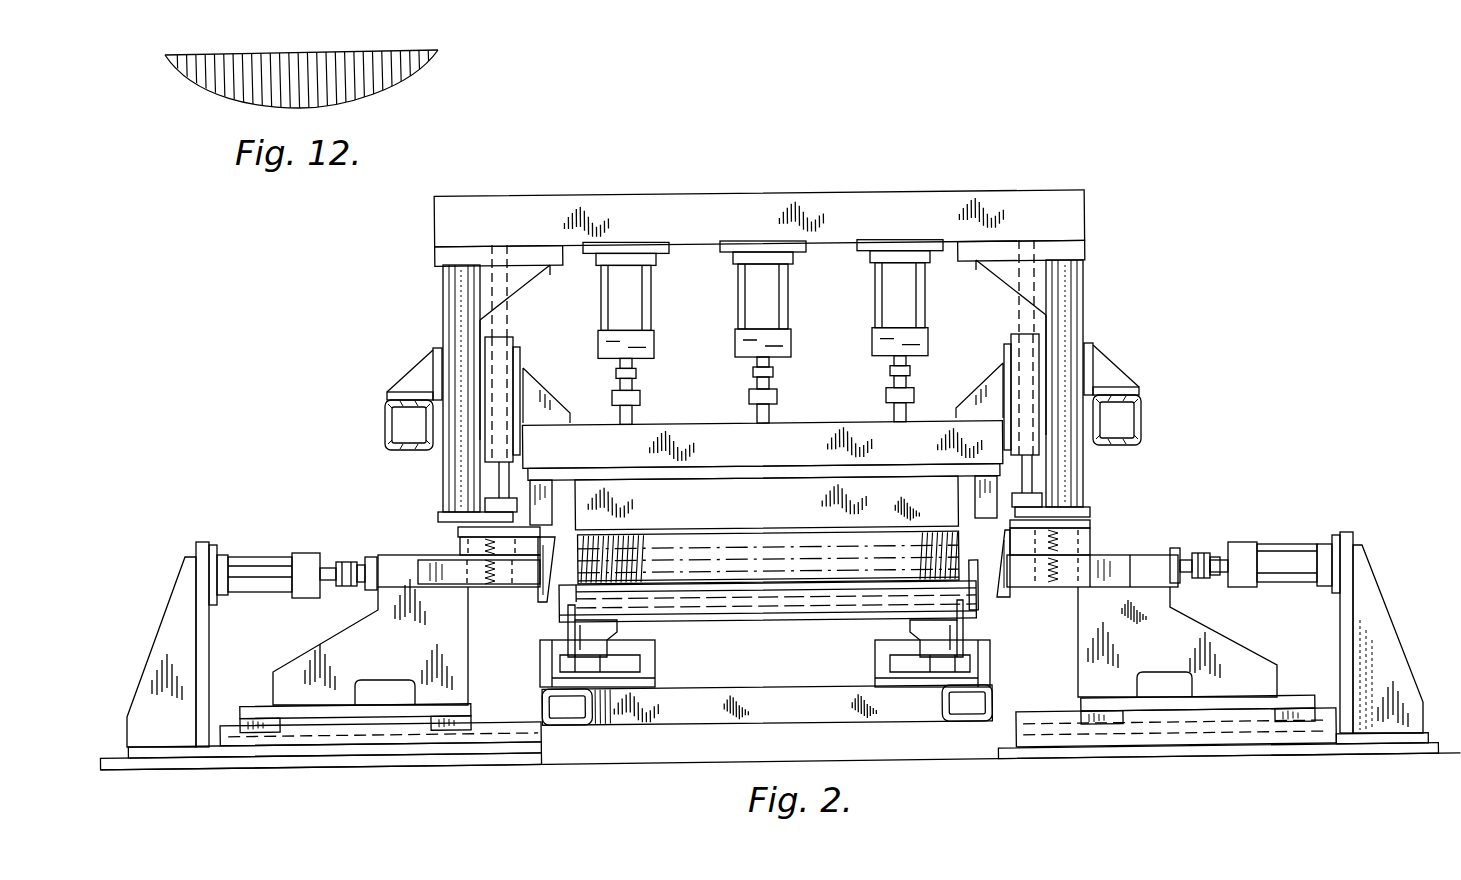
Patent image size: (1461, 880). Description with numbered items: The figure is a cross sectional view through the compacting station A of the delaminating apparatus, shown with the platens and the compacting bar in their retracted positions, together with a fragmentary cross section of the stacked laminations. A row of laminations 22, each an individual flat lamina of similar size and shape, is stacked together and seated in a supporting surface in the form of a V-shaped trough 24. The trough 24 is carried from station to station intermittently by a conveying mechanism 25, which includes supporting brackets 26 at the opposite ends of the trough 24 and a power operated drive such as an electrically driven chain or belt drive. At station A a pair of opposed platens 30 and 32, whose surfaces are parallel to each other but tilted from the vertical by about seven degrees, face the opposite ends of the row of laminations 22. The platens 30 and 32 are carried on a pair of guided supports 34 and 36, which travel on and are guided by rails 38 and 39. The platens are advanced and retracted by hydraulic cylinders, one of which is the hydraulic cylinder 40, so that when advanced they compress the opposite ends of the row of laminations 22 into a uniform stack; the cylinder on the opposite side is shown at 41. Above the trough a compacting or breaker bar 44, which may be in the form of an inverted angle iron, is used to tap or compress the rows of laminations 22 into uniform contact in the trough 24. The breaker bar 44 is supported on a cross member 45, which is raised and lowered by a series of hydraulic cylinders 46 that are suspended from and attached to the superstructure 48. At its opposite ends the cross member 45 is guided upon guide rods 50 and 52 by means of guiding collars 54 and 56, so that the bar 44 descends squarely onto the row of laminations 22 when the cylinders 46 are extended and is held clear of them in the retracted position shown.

In FIG. 2, the station A is at (1141, 241).
In FIG. 12, the laminations 22 is at (342, 56).
In FIG. 2, the laminations 22 is at (578, 600).
In FIG. 2, the V-shaped trough 24 is at (706, 607).
In FIG. 2, the conveying mechanism 25 is at (877, 634).
In FIG. 2, the supporting brackets 26 is at (568, 629).
In FIG. 2, the platen 30 is at (538, 597).
In FIG. 2, the platen 32 is at (1012, 594).
In FIG. 2, the guided support 34 is at (410, 648).
In FIG. 2, the guided support 36 is at (1168, 643).
In FIG. 2, the rail 38 is at (380, 727).
In FIG. 2, the rail 39 is at (1143, 723).
In FIG. 2, the hydraulic cylinder 40 is at (268, 560).
In FIG. 2, the right actuating cylinder 41 is at (1296, 552).
In FIG. 2, the breaker bar 44 is at (802, 512).
In FIG. 2, the cross member 45 is at (789, 454).
In FIG. 2, the hydraulic cylinders 46 is at (630, 292).
In FIG. 2, the superstructure 48 is at (791, 195).
In FIG. 2, the guide rod 50 is at (507, 483).
In FIG. 2, the guide rod 52 is at (1036, 479).
In FIG. 2, the guiding collar 54 is at (508, 368).
In FIG. 2, the guiding collar 56 is at (1035, 372).